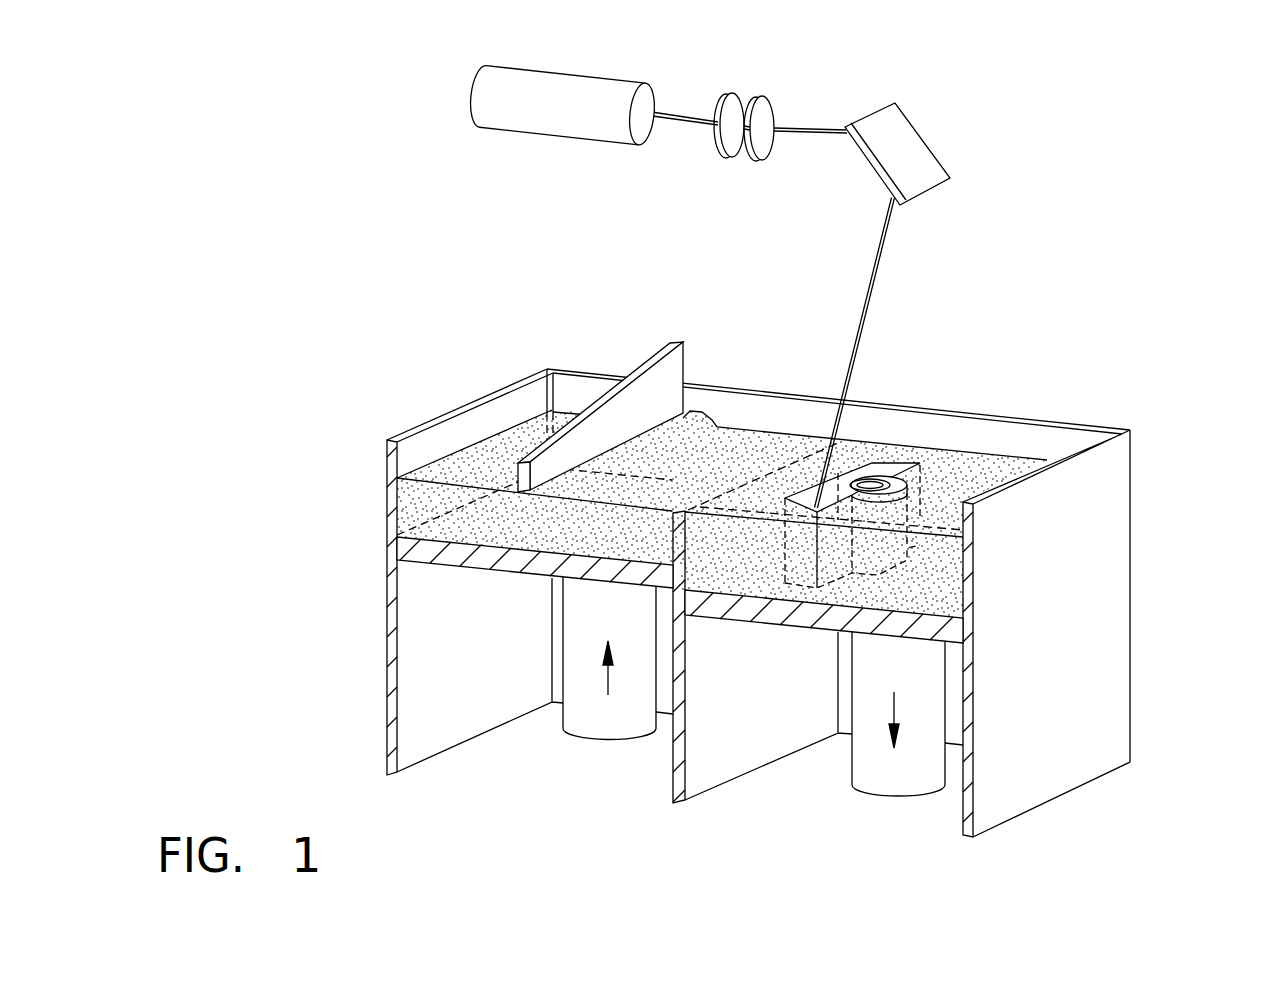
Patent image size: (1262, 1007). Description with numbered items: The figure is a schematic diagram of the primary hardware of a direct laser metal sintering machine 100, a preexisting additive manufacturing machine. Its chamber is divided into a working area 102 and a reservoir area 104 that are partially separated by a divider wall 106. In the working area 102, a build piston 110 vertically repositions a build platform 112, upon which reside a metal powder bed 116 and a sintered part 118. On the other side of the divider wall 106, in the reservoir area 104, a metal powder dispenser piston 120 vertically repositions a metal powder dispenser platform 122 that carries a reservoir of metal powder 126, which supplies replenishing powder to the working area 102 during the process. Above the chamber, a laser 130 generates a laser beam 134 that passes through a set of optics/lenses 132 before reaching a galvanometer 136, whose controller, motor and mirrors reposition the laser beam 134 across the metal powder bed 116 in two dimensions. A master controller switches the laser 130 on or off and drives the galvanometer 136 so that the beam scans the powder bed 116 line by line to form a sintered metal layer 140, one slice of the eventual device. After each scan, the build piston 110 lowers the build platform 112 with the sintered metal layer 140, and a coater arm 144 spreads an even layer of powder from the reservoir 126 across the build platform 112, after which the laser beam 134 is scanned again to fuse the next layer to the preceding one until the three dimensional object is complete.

The direct laser metal sintering machine 100 is at (1083, 131).
The working area 102 is at (1104, 391).
The reservoir area 104 is at (562, 346).
The divider wall 106 is at (683, 510).
The build piston 110 is at (882, 768).
The build platform 112 is at (777, 615).
The metal powder bed 116 is at (967, 466).
The sintered part 118 is at (903, 463).
The metal powder dispenser piston 120 is at (587, 722).
The metal powder dispenser platform 122 is at (450, 557).
The reservoir of metal powder 126 is at (425, 500).
The laser 130 is at (560, 87).
The set of optics/lenses 132 is at (762, 97).
The laser beam 134 is at (869, 300).
The galvanometer 136 is at (908, 147).
The sintered metal layer 140 is at (873, 470).
The coater arm 144 is at (567, 428).